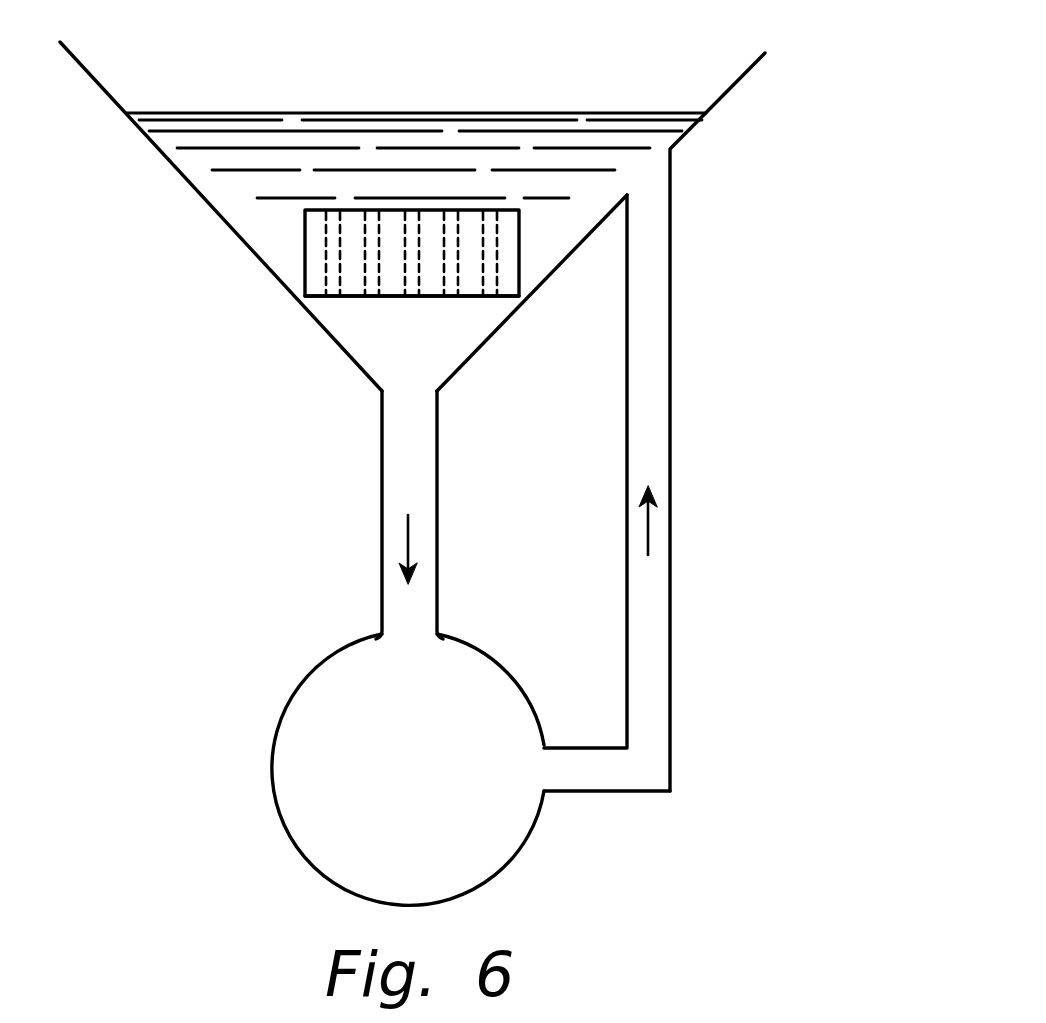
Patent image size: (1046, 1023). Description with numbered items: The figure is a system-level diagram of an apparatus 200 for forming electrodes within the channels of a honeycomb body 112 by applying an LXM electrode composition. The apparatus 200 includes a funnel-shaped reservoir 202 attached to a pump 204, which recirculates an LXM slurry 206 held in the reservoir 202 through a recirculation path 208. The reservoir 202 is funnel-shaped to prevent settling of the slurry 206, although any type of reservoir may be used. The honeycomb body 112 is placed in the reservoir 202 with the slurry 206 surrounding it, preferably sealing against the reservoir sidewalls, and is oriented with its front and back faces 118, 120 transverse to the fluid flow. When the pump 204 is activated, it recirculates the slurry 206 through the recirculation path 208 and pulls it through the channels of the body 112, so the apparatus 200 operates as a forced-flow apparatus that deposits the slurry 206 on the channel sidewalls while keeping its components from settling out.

The apparatus 200 is at (806, 142).
The funnel-shaped reservoir 202 is at (200, 193).
The pump 204 is at (283, 711).
The LXM slurry 206 is at (557, 147).
The recirculation path 208 is at (647, 527).
The honeycomb body 112 is at (355, 217).
The front face 118 is at (428, 207).
The back face 120 is at (352, 293).